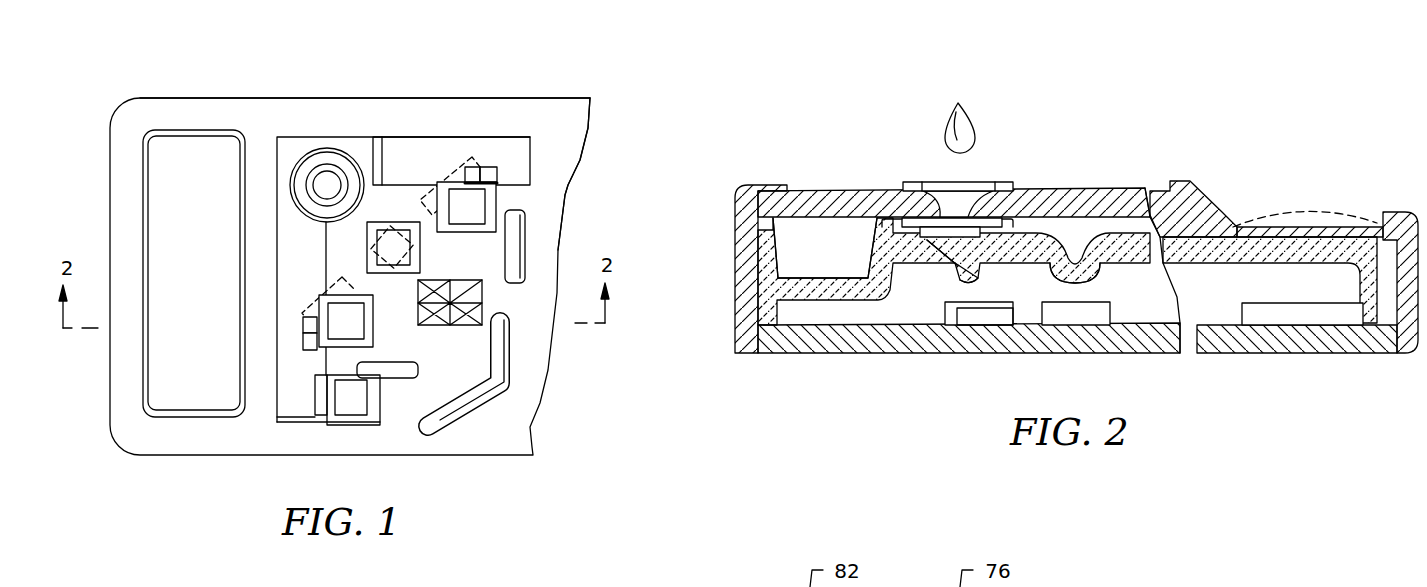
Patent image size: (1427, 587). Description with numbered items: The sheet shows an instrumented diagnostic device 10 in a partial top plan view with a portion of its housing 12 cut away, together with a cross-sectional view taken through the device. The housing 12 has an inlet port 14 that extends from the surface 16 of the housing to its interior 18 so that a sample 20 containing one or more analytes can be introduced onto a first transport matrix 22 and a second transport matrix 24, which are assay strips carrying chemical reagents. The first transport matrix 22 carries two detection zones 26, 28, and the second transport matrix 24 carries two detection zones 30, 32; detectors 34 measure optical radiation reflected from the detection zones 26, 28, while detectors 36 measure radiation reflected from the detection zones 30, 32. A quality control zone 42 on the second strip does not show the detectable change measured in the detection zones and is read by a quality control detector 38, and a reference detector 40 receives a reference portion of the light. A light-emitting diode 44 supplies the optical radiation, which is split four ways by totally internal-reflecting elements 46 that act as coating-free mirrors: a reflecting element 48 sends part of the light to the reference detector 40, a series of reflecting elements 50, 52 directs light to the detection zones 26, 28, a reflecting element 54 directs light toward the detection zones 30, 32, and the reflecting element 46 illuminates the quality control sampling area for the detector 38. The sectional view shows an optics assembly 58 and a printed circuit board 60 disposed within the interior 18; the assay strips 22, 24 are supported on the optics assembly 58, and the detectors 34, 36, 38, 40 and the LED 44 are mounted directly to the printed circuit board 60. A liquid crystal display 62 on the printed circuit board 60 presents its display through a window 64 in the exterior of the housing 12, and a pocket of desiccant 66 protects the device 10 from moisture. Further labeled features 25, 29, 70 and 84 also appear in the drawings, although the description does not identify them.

In FIG. 1, the instrumented diagnostic device 10 is at (520, 410).
In FIG. 1, the housing 12 is at (200, 107).
In FIG. 1, the inlet port 14 is at (327, 182).
In FIG. 2, the surface of the housing 16 is at (1050, 190).
In FIG. 2, the interior of the housing 18 is at (1078, 239).
In FIG. 2, the sample 20 is at (966, 130).
In FIG. 1, the first transport matrix 22 is at (477, 166).
In FIG. 1, the second transport matrix 24 is at (293, 407).
In FIG. 1, the board section 25 is at (381, 141).
In FIG. 1, the detection zone 26 is at (474, 176).
In FIG. 1, the detection zone 28 is at (590, 128).
In FIG. 1, the connector 29 is at (491, 173).
In FIG. 1, the detection zone 30 is at (296, 320).
In FIG. 1, the detection zone 32 is at (303, 342).
In FIG. 1, the detectors 34 is at (462, 206).
In FIG. 1, the detectors 36 is at (340, 333).
In FIG. 1, the quality control detector 38 is at (348, 399).
In FIG. 2, the quality control detector 38 is at (998, 320).
In FIG. 1, the reference detector 40 is at (387, 240).
In FIG. 1, the quality control zone 42 is at (322, 408).
In FIG. 1, the light-emitting diode 44 is at (471, 292).
In FIG. 2, the light-emitting diode 44 is at (1104, 320).
In FIG. 1, the totally internal-reflecting element 46 is at (465, 409).
In FIG. 1, the reflecting element 48 is at (376, 250).
In FIG. 1, the reflecting element 50 is at (514, 242).
In FIG. 1, the reflecting element 52 is at (457, 172).
In FIG. 1, the reflecting element 54 is at (399, 376).
In FIG. 2, the optics assembly 58 is at (776, 283).
In FIG. 2, the printed circuit board 60 is at (1157, 340).
In FIG. 2, the liquid crystal display 62 is at (1302, 317).
In FIG. 2, the window 64 is at (1290, 228).
In FIG. 1, the pocket of desiccant 66 is at (188, 157).
In FIG. 2, the pocket of desiccant 66 is at (806, 242).
In FIG. 2, the bulge under lens 70 is at (1094, 277).
In FIG. 2, the foot of insert 84 is at (960, 280).